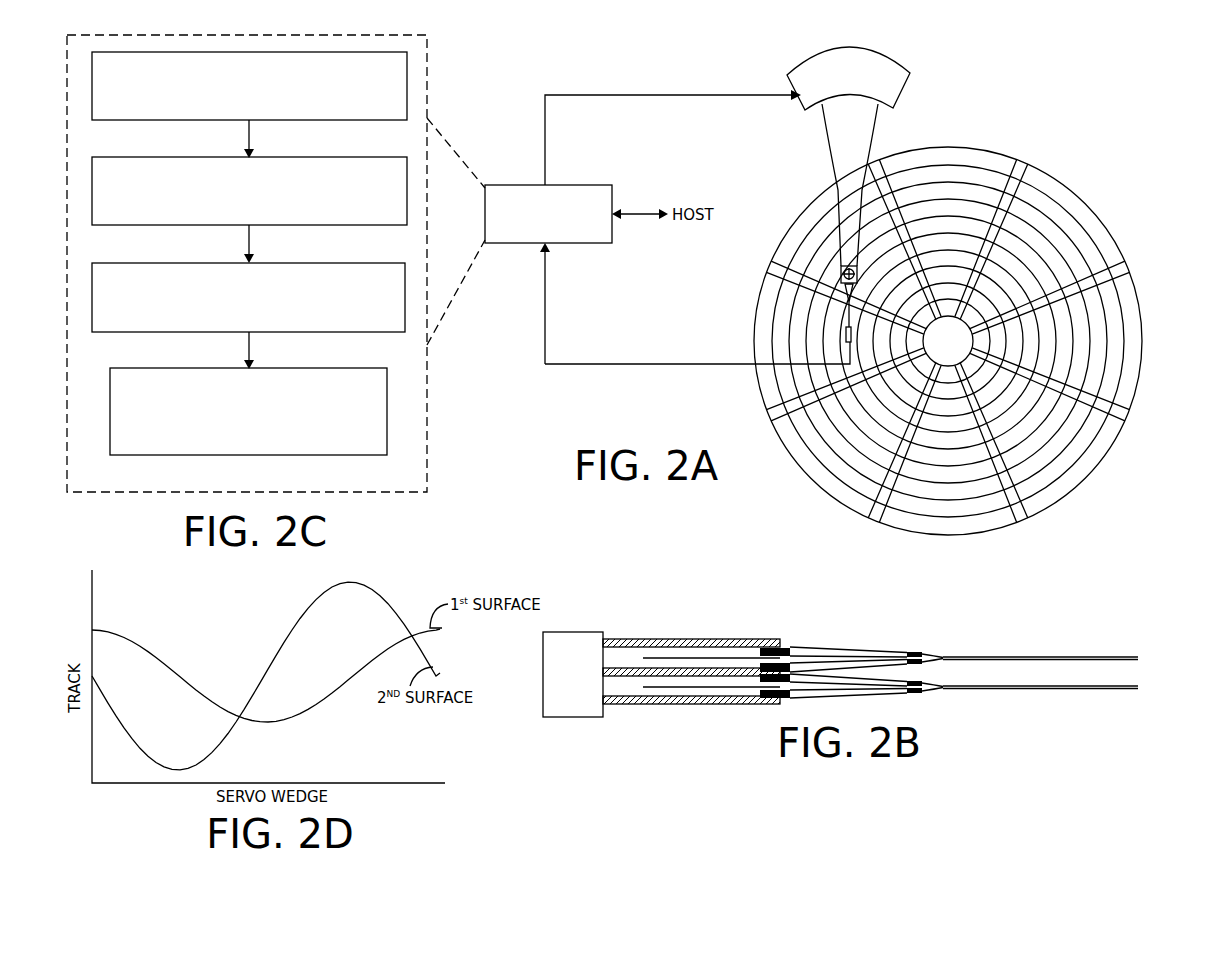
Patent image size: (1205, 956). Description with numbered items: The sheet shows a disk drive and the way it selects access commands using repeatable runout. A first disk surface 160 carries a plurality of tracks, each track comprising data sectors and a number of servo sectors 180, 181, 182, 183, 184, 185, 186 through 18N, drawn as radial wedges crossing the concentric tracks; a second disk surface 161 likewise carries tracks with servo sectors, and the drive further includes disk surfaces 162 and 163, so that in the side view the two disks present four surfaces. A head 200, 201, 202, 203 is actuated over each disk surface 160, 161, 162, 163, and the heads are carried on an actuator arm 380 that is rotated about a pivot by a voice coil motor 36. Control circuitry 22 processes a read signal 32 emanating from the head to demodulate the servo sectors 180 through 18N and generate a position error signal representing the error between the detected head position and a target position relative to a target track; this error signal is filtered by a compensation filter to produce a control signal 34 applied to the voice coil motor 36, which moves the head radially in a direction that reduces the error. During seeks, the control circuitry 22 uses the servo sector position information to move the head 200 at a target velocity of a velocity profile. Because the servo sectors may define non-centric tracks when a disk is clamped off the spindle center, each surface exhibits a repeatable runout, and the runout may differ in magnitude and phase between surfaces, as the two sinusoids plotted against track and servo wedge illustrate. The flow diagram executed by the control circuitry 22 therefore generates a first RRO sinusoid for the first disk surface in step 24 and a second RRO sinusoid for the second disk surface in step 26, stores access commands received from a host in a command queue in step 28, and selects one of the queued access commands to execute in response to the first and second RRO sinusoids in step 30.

In FIG. 2A, the control circuitry 22 is at (582, 185).
In FIG. 2C, the first RRO sinusoid generating step 24 is at (362, 120).
In FIG. 2C, the second RRO sinusoid generating step 26 is at (362, 225).
In FIG. 2C, the command queue storing step 28 is at (370, 332).
In FIG. 2C, the access command selecting step 30 is at (360, 455).
In FIG. 2A, the read signal 32 is at (637, 364).
In FIG. 2A, the control signal 34 is at (545, 143).
In FIG. 2A, the voice coil motor 36 is at (800, 108).
In FIG. 2B, the voice coil motor 36 is at (575, 718).
In FIG. 2A, the actuator arm 380 is at (833, 172).
In FIG. 2A, the first disk surface 160 is at (1082, 190).
In FIG. 2B, the first disk surface 160 is at (1045, 657).
In FIG. 2B, the second disk surface 161 is at (1085, 660).
In FIG. 2B, the disk surface 162 is at (1072, 686).
In FIG. 2B, the disk surface 163 is at (1085, 689).
In FIG. 2A, the servo sector 180 is at (1024, 160).
In FIG. 2A, the servo sector 181 is at (1123, 268).
In FIG. 2A, the servo sector 182 is at (1122, 413).
In FIG. 2A, the servo sector 183 is at (1013, 512).
In FIG. 2A, the servo sector 184 is at (874, 512).
In FIG. 2A, the servo sector 185 is at (773, 413).
In FIG. 2A, the servo sector 186 is at (777, 258).
In FIG. 2A, the servo sector 18N is at (883, 160).
In FIG. 2A, the head 200 is at (836, 331).
In FIG. 2B, the head 200 is at (918, 653).
In FIG. 2B, the head 201 is at (930, 662).
In FIG. 2B, the head 202 is at (930, 686).
In FIG. 2B, the head 203 is at (920, 692).